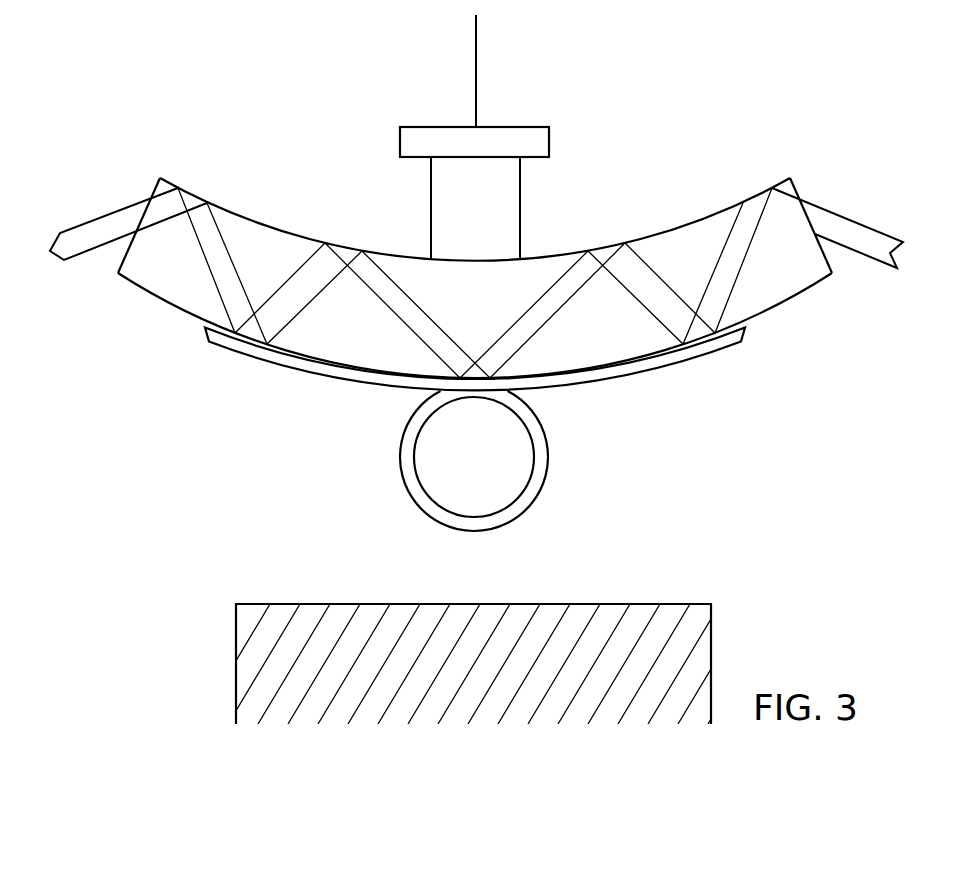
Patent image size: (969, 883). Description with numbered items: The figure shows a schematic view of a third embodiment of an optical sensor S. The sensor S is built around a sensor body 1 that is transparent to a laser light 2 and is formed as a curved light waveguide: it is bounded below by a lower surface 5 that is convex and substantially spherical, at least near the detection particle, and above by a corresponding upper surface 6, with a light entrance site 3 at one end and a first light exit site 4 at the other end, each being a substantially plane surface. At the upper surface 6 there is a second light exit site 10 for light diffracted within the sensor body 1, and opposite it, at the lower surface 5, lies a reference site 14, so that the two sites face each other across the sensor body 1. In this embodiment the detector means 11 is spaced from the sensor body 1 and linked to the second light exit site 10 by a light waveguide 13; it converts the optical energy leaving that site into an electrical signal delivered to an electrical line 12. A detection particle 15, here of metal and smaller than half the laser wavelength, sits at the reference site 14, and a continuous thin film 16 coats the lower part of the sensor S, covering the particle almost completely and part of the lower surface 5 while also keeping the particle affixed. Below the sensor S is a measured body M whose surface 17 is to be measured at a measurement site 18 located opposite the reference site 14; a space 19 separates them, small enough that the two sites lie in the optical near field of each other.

The sensor body 1 is at (163, 312).
The laser light 2 is at (868, 232).
The light entrance site 3 is at (795, 186).
The first light exit site 4 is at (159, 179).
The lower surface 5 is at (792, 300).
The upper surface 6 is at (261, 223).
The second light exit site 10 is at (477, 155).
The detector means 11 is at (434, 127).
The electrical line 12 is at (477, 47).
The light waveguide 13 is at (519, 207).
The reference site 14 is at (478, 381).
The detection particle 15 is at (548, 440).
The thin film 16 is at (297, 372).
The surface 17 is at (618, 604).
The measurement site 18 is at (484, 604).
The space 19 is at (667, 506).
The optical sensor S is at (639, 96).
The measured body M is at (291, 598).